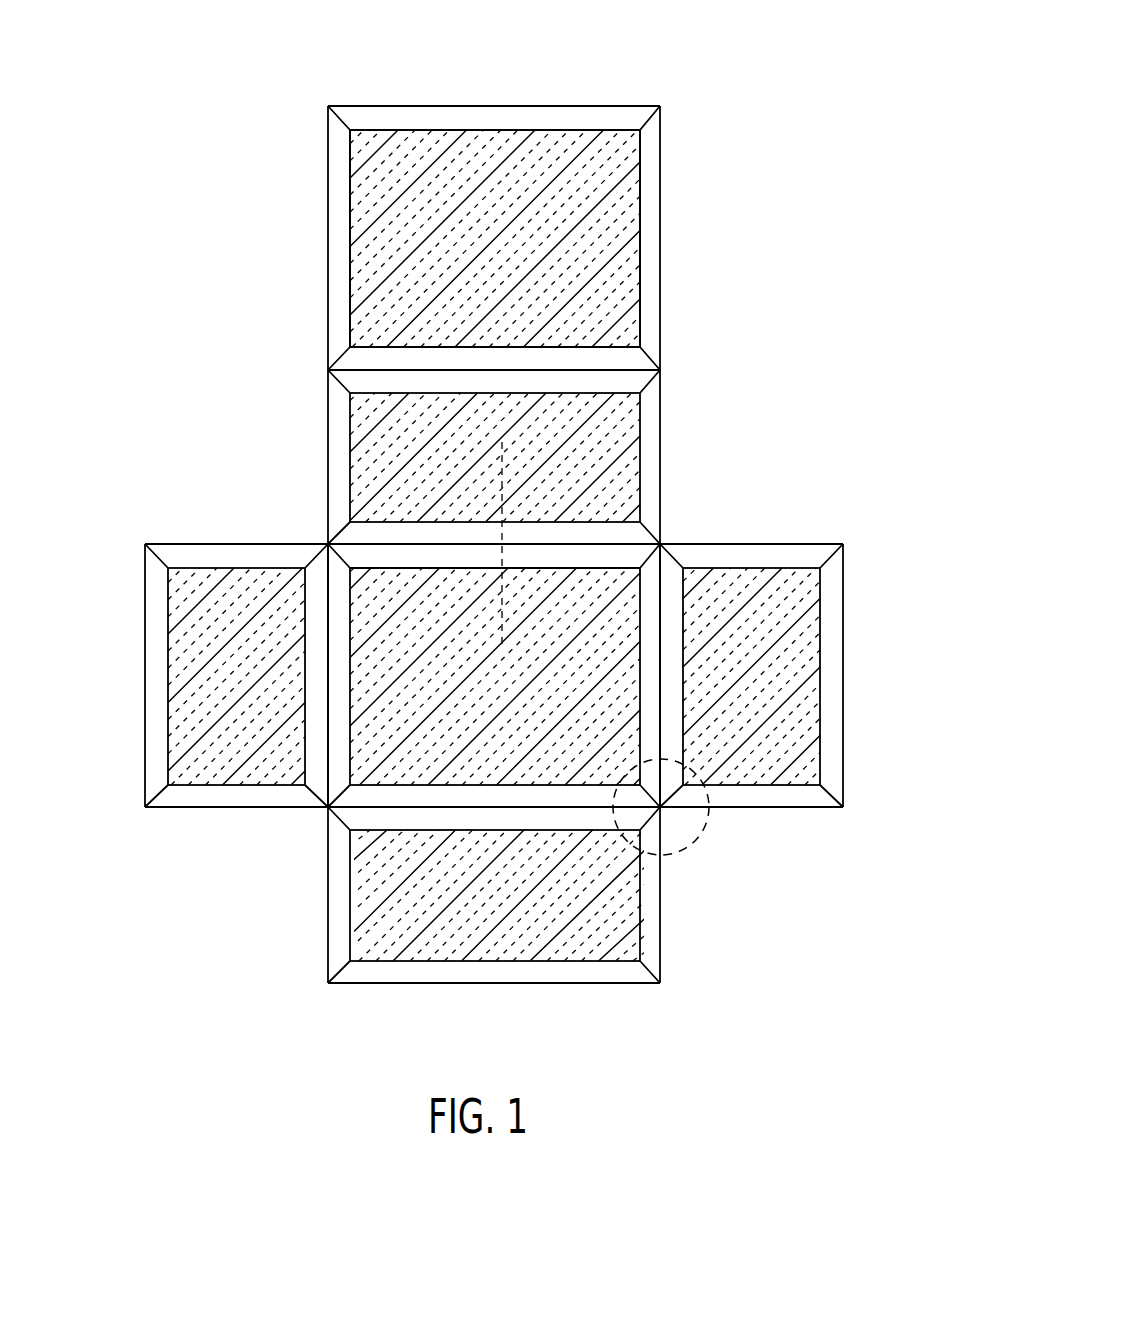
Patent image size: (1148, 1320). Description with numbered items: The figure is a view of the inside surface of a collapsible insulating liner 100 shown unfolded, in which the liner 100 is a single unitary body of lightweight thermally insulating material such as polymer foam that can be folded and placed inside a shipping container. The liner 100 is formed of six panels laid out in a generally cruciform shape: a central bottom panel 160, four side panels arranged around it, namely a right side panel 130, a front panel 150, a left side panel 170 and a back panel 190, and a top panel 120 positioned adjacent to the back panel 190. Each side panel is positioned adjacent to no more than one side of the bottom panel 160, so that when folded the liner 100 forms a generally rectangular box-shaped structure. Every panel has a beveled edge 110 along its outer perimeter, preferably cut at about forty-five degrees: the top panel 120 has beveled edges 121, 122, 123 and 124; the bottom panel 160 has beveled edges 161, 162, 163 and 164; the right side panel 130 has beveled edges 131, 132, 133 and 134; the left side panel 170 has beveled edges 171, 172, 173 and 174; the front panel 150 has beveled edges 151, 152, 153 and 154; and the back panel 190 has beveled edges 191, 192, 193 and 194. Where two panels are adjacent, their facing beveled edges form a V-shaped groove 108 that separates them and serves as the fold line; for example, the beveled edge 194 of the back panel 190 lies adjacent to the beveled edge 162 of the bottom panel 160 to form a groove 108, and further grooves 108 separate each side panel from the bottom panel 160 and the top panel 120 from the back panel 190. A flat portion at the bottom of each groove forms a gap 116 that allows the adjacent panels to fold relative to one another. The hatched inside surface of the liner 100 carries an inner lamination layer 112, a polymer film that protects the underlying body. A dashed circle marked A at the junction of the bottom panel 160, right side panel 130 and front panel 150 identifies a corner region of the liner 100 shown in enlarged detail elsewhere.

The collapsible insulating liner 100 is at (840, 77).
The groove 108 is at (405, 532).
The beveled edge 110 is at (774, 560).
The inner lamination layer 112 is at (605, 304).
The gap 116 is at (598, 568).
The top panel 120 is at (327, 238).
The beveled edge 121 is at (650, 180).
The beveled edge 122 is at (537, 117).
The beveled edge 123 is at (337, 175).
The beveled edge 124 is at (358, 360).
The right side panel 130 is at (845, 722).
The beveled edge 131 is at (835, 655).
The beveled edge 132 is at (737, 560).
The beveled edge 133 is at (672, 582).
The beveled edge 134 is at (780, 798).
The front panel 150 is at (662, 937).
The beveled edge 151 is at (648, 892).
The beveled edge 152 is at (475, 822).
The beveled edge 153 is at (338, 917).
The beveled edge 154 is at (495, 973).
The bottom panel 160 is at (388, 772).
The beveled edge 161 is at (645, 700).
The beveled edge 162 is at (405, 560).
The beveled edge 163 is at (340, 703).
The beveled edge 164 is at (423, 793).
The left side panel 170 is at (148, 675).
The beveled edge 171 is at (312, 657).
The beveled edge 172 is at (228, 555).
The beveled edge 173 is at (150, 733).
The beveled edge 174 is at (215, 795).
The back panel 190 is at (662, 457).
The beveled edge 191 is at (648, 422).
The beveled edge 192 is at (358, 377).
The beveled edge 193 is at (338, 438).
The beveled edge 194 is at (538, 528).
The detail region A is at (703, 837).